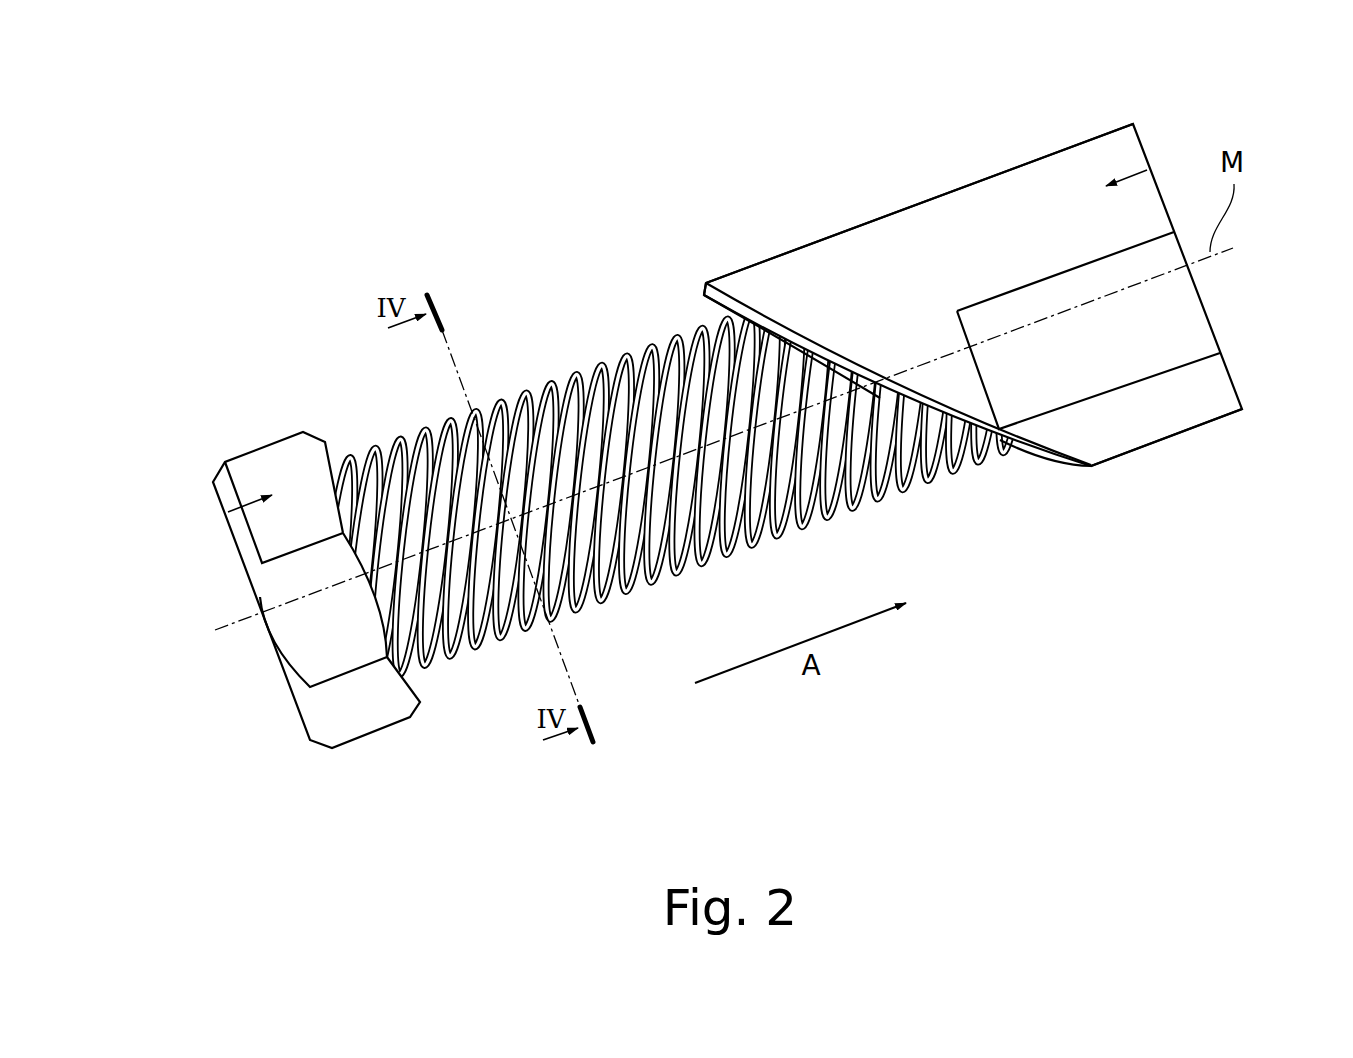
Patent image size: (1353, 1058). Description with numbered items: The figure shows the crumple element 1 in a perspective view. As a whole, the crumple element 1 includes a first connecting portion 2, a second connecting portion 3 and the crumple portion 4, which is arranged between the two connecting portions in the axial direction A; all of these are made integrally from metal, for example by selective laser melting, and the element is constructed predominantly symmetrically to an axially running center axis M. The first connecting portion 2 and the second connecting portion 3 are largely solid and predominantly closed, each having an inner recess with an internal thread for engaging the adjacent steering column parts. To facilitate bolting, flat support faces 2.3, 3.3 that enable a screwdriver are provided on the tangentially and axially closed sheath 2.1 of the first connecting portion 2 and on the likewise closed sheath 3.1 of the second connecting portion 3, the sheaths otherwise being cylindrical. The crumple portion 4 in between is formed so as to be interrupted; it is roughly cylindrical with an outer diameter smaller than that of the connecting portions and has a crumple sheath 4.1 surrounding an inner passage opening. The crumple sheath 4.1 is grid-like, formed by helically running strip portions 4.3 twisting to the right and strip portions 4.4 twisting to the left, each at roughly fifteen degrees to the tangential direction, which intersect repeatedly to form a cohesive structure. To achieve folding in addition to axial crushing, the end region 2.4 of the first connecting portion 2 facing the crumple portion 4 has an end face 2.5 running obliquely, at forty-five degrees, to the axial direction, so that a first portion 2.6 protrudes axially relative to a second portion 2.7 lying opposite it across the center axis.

The crumple element 1 is at (585, 200).
The first connecting portion 2 is at (950, 319).
The sheath of the first connecting portion 2.1 is at (1076, 136).
The flat support face 2.3 is at (1170, 290).
The end region of the first connecting portion 2.4 is at (697, 262).
The end face 2.5 is at (728, 320).
The first portion 2.6 is at (695, 307).
The second portion 2.7 is at (1025, 478).
The second connecting portion 3 is at (292, 613).
The sheath of the second connecting portion 3.1 is at (253, 450).
The flat support face 3.3 is at (264, 598).
The crumple portion 4 is at (676, 455).
The crumple sheath 4.1 is at (714, 580).
The strip portions of the first group 4.3 is at (615, 592).
The strip portions of the second group 4.4 is at (430, 432).